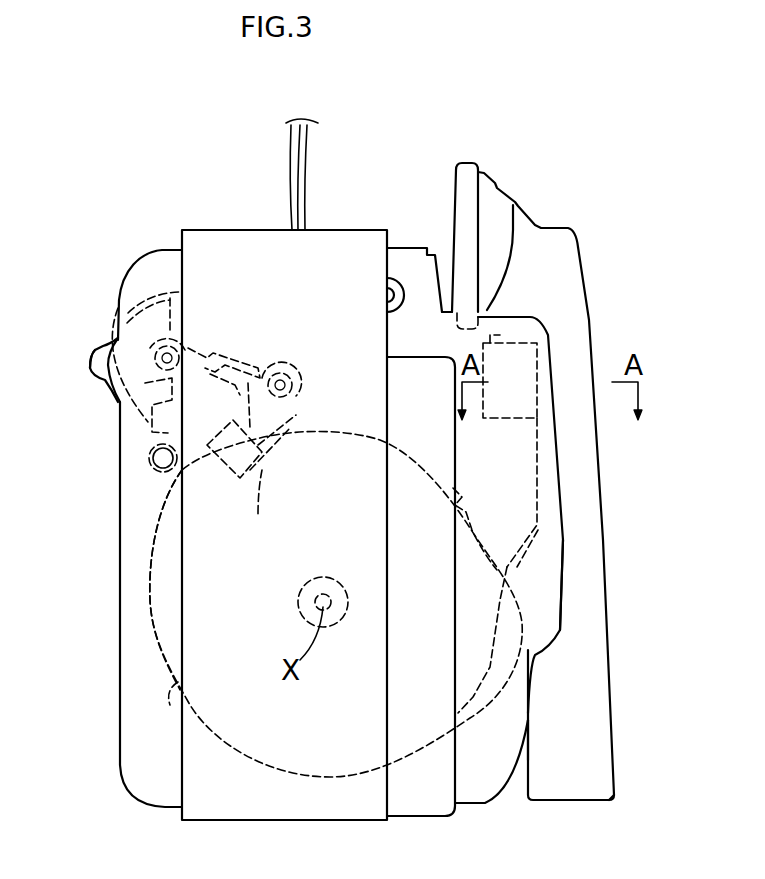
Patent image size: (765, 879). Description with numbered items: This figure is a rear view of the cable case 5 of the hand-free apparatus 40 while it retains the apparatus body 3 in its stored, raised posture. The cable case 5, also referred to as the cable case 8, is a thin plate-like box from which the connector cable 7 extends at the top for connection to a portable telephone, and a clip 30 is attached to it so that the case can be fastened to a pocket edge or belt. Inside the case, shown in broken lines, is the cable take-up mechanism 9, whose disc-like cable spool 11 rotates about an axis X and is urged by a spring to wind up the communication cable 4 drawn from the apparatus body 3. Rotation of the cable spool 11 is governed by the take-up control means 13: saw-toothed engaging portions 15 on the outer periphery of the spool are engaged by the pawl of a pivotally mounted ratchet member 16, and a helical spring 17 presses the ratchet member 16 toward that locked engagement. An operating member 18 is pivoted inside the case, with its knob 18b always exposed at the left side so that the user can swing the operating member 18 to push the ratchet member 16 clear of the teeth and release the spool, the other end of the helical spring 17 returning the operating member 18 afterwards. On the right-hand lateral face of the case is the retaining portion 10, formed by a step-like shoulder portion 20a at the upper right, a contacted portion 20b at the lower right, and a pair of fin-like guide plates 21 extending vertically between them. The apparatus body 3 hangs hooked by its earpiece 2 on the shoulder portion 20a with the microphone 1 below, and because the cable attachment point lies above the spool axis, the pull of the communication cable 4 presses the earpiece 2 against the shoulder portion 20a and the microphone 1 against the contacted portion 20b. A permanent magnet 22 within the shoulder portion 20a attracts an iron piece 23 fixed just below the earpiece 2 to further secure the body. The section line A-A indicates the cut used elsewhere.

The microphone 1 is at (612, 770).
The earpiece 2 is at (493, 205).
The apparatus body 3 is at (608, 468).
The communication cable 4 is at (520, 605).
The cable case 5 is at (127, 253).
The connector cable 7 is at (290, 165).
The cable case 8 is at (140, 765).
The cable take-up mechanism 9 is at (170, 590).
The retaining portion 10 is at (568, 510).
The cable spool 11 is at (282, 760).
The take-up control means 13 is at (235, 348).
The saw-toothed engaging portion 15 is at (264, 470).
The ratchet member 16 is at (298, 455).
The helical spring 17 is at (130, 442).
The operating member 18 is at (110, 330).
The knob 18b is at (90, 364).
The shoulder portion 20a is at (468, 308).
The contacted portion 20b is at (535, 735).
The fin-like guide plates 21 is at (555, 573).
The permanent magnet 22 is at (505, 343).
The iron piece 23 is at (545, 357).
The clip 30 is at (323, 230).
The hand-free apparatus 40 is at (617, 153).